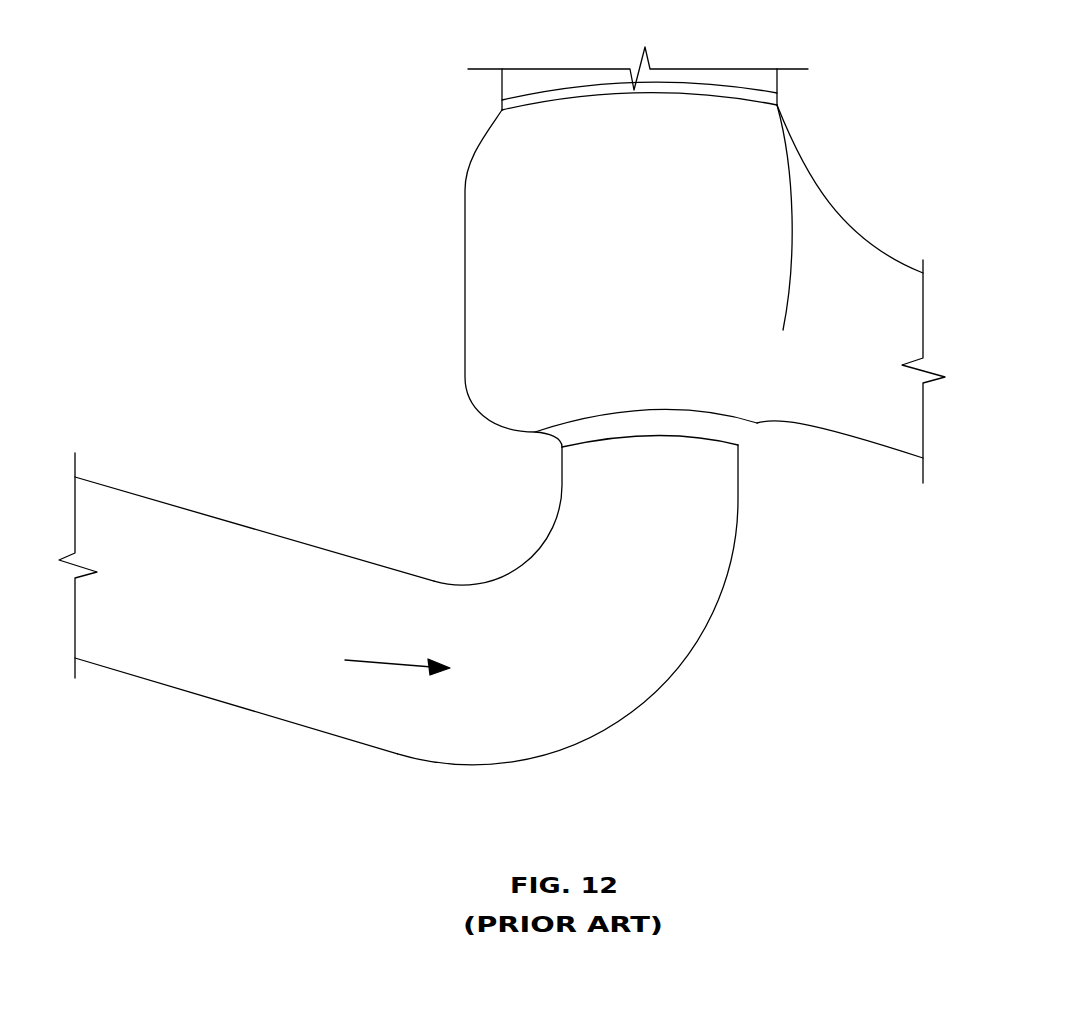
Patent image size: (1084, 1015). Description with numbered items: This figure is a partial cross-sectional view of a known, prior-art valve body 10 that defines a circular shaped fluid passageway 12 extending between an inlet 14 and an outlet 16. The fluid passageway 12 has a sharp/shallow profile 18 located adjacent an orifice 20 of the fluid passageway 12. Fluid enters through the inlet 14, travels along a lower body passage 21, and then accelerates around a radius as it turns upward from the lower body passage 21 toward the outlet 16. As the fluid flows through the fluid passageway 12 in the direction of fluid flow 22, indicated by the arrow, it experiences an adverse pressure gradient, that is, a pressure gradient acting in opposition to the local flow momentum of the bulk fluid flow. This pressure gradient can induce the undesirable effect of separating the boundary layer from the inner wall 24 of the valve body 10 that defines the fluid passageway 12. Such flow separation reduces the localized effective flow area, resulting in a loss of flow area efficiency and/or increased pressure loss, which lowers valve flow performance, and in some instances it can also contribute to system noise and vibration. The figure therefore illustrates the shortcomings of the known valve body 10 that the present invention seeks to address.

The valve body 10 is at (243, 60).
The fluid passageway 12 is at (232, 655).
The inlet 14 is at (123, 508).
The outlet 16 is at (858, 415).
The sharp/shallow profile 18 is at (498, 532).
The orifice 20 is at (670, 335).
The lower body passage 21 is at (263, 717).
The direction of fluid flow 22 is at (367, 662).
The inner wall 24 is at (678, 646).